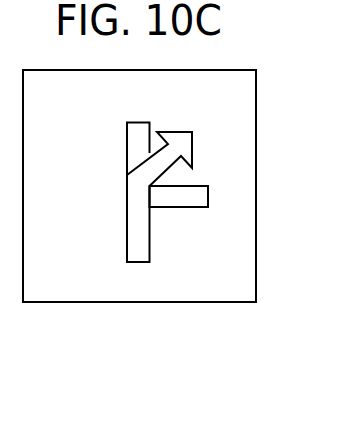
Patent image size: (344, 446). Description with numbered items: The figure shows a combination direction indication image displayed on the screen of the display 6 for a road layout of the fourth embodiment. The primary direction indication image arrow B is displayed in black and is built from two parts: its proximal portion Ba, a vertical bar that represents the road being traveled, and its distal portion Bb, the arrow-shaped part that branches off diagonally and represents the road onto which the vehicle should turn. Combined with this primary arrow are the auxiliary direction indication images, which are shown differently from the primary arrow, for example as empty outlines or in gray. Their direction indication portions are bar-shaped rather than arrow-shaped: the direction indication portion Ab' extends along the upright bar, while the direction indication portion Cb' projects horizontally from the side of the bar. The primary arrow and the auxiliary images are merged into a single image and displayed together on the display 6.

The display 6 is at (255, 103).
The primary direction indication image arrow B is at (157, 209).
The proximal portion Ba is at (150, 248).
The distal portion Bb is at (192, 138).
The direction indication portion Ab' is at (111, 154).
The direction indication portion Cb' is at (198, 228).